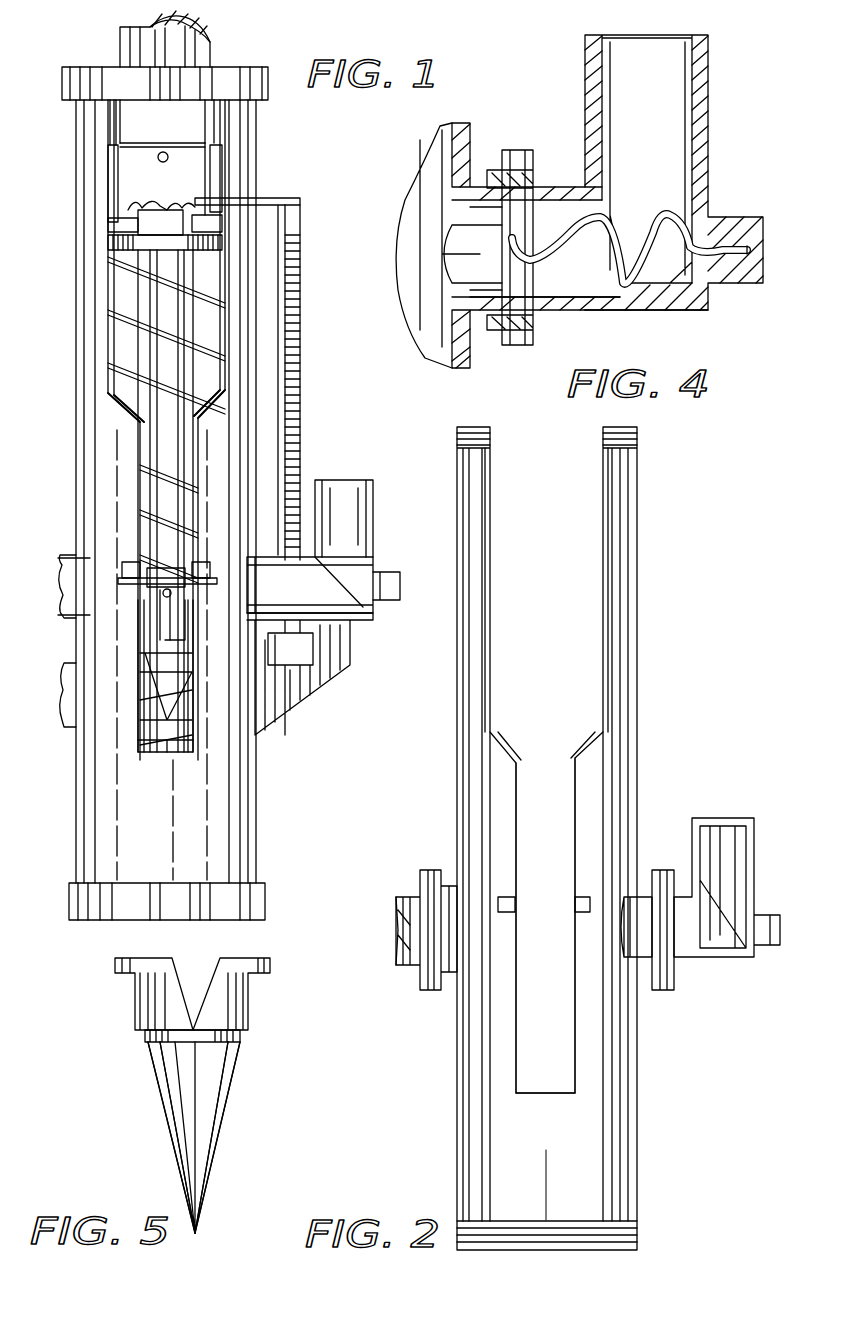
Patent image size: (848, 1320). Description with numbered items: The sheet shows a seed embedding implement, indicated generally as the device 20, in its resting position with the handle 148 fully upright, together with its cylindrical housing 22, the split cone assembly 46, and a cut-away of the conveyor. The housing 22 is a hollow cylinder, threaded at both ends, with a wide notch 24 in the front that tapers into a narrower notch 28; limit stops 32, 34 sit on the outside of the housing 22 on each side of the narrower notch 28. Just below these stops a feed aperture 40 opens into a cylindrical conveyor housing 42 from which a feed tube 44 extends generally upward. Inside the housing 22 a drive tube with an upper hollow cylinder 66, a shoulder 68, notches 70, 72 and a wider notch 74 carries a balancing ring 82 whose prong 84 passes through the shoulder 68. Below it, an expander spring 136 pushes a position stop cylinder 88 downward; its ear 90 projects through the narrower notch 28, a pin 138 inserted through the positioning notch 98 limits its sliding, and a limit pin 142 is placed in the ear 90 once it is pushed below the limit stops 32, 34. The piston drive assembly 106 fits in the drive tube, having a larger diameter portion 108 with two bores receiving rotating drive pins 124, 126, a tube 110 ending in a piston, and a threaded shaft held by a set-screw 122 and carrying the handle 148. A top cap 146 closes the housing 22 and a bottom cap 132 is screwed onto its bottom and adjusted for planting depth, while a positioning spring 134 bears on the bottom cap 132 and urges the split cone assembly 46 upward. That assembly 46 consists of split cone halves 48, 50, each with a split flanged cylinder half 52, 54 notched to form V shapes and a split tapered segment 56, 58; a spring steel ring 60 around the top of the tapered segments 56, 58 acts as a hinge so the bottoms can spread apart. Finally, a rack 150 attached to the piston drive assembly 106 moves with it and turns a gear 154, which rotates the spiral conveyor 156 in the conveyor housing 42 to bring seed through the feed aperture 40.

In FIG. 1, the device 20 is at (102, 47).
In FIG. 1, the housing 22 is at (76, 812).
In FIG. 4, the housing 22 is at (470, 135).
In FIG. 2, the housing 22 is at (445, 1078).
In FIG. 1, the wide notch 24 is at (108, 290).
In FIG. 2, the wide notch 24 is at (497, 632).
In FIG. 1, the narrower notch 28 is at (138, 745).
In FIG. 2, the narrower notch 28 is at (512, 822).
In FIG. 1, the limit stop 32 is at (130, 562).
In FIG. 2, the limit stop 32 is at (505, 897).
In FIG. 1, the limit stop 34 is at (200, 562).
In FIG. 2, the limit stop 34 is at (582, 897).
In FIG. 1, the feed aperture 40 is at (238, 582).
In FIG. 4, the feed aperture 40 is at (438, 270).
In FIG. 2, the feed aperture 40 is at (618, 940).
In FIG. 1, the conveyor housing 42 is at (362, 615).
In FIG. 4, the conveyor housing 42 is at (680, 315).
In FIG. 2, the conveyor housing 42 is at (403, 965).
In FIG. 1, the feed tube 44 is at (372, 480).
In FIG. 4, the feed tube 44 is at (708, 52).
In FIG. 2, the feed tube 44 is at (740, 818).
In FIG. 5, the split cone assembly 46 is at (166, 1188).
In FIG. 5, the split cone half 48 is at (146, 1086).
In FIG. 5, the split cone half 50 is at (245, 1084).
In FIG. 1, the split flanged cylinder half 52 is at (140, 688).
In FIG. 5, the split flanged cylinder half 52 is at (135, 1003).
In FIG. 1, the split flanged cylinder half 54 is at (190, 702).
In FIG. 5, the split flanged cylinder half 54 is at (248, 1000).
In FIG. 1, the split tapered segment 56 is at (150, 752).
In FIG. 5, the split tapered segment 56 is at (172, 1158).
In FIG. 1, the split tapered segment 58 is at (185, 752).
In FIG. 5, the split tapered segment 58 is at (225, 1138).
In FIG. 5, the spring steel ring 60 is at (240, 1038).
In FIG. 1, the upper hollow cylinder 66 is at (108, 150).
In FIG. 1, the shoulder 68 is at (108, 222).
In FIG. 1, the notch 70 is at (180, 372).
In FIG. 1, the notch 72 is at (212, 395).
In FIG. 1, the wider notch 74 is at (214, 158).
In FIG. 1, the balancing ring 82 is at (108, 242).
In FIG. 1, the prong 84 is at (160, 222).
In FIG. 1, the position stop cylinder 88 is at (158, 620).
In FIG. 1, the ear 90 is at (150, 587).
In FIG. 1, the positioning notch 98 is at (185, 630).
In FIG. 1, the piston drive assembly 106 is at (192, 322).
In FIG. 1, the larger diameter portion 108 is at (118, 165).
In FIG. 1, the tube 110 is at (172, 450).
In FIG. 1, the set-screw 122 is at (163, 150).
In FIG. 1, the rotating drive pin 124 is at (132, 210).
In FIG. 1, the rotating drive pin 126 is at (188, 210).
In FIG. 1, the bottom cap 132 is at (69, 895).
In FIG. 1, the positioning spring 134 is at (180, 685).
In FIG. 1, the expander spring 136 is at (110, 370).
In FIG. 1, the pin 138 is at (170, 595).
In FIG. 1, the limit pin 142 is at (125, 584).
In FIG. 1, the top cap 146 is at (243, 78).
In FIG. 1, the handle 148 is at (198, 32).
In FIG. 1, the rack 150 is at (302, 415).
In FIG. 4, the gear 154 is at (533, 325).
In FIG. 2, the gear 154 is at (430, 870).
In FIG. 4, the spiral conveyor 156 is at (643, 228).